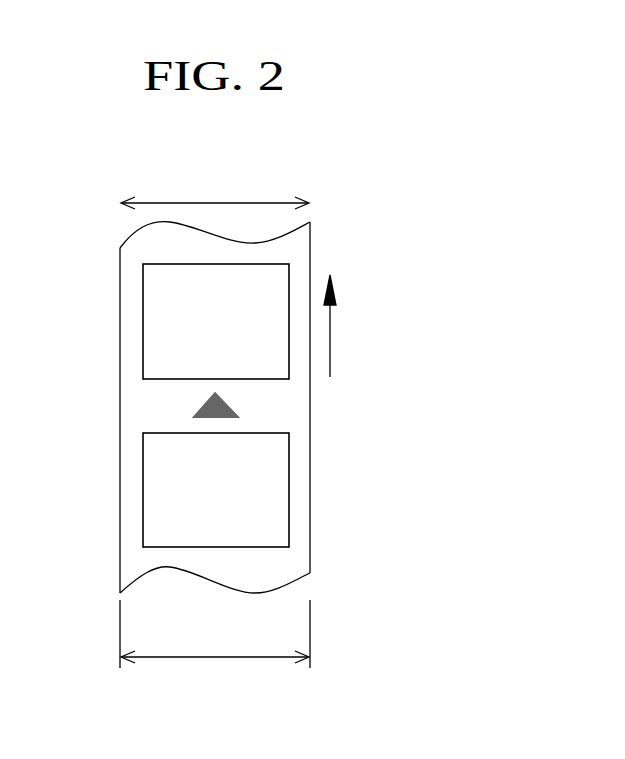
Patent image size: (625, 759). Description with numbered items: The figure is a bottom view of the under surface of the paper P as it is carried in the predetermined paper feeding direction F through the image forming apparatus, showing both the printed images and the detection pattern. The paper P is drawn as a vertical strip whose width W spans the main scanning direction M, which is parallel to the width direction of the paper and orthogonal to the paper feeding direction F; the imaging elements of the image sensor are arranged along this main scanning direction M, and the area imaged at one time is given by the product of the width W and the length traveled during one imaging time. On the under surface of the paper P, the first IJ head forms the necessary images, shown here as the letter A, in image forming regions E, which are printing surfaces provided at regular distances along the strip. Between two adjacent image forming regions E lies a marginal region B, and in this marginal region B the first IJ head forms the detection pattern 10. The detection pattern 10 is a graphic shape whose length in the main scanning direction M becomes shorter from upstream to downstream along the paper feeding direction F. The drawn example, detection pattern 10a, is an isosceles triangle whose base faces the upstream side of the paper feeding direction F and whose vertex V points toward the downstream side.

The image forming region E is at (158, 298).
The vertex V is at (212, 390).
The marginal region B is at (138, 413).
The detection pattern 10 is at (232, 403).
The detection pattern 10a is at (216, 405).
The paper P is at (311, 520).
The width of the paper W is at (215, 634).
The main scanning direction M is at (215, 174).
The paper feeding direction F is at (423, 326).